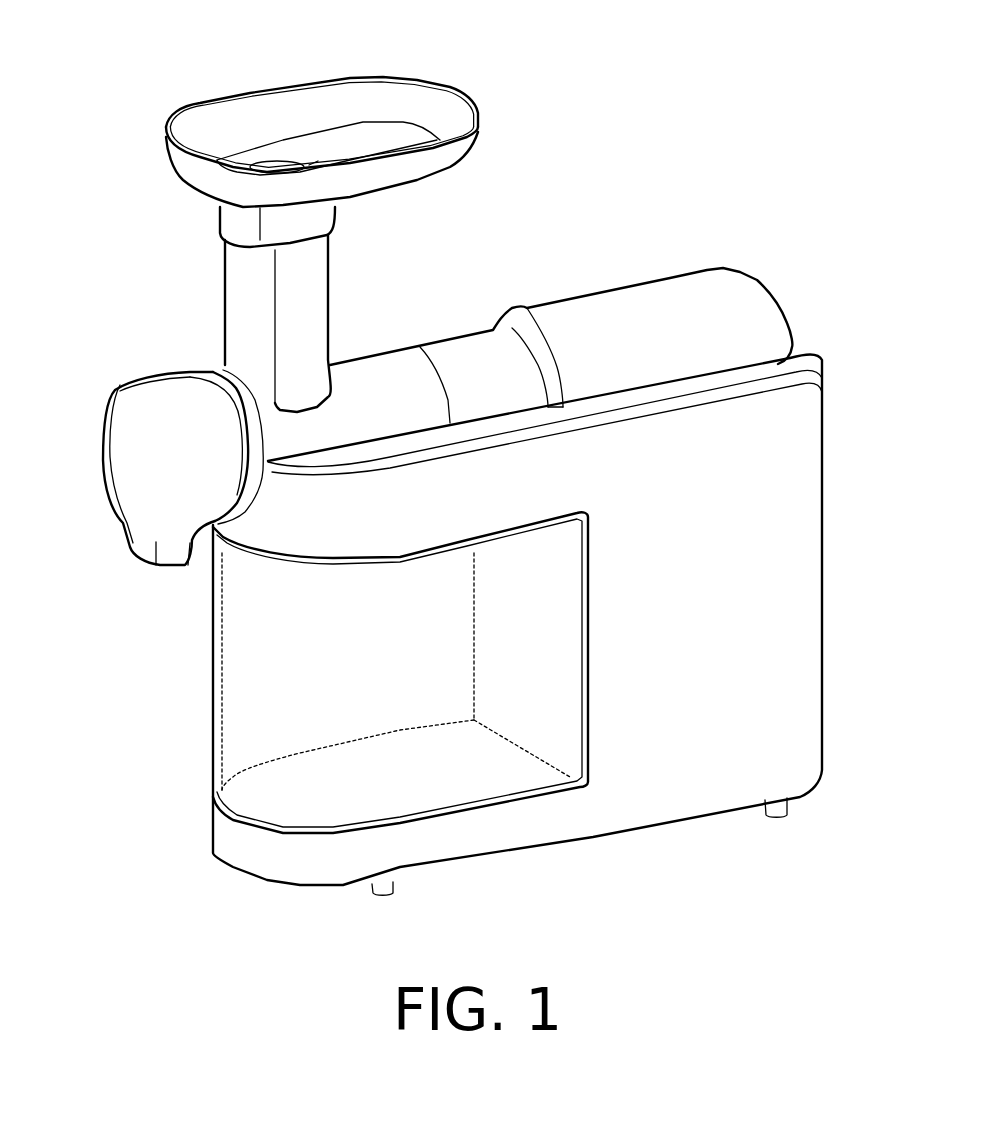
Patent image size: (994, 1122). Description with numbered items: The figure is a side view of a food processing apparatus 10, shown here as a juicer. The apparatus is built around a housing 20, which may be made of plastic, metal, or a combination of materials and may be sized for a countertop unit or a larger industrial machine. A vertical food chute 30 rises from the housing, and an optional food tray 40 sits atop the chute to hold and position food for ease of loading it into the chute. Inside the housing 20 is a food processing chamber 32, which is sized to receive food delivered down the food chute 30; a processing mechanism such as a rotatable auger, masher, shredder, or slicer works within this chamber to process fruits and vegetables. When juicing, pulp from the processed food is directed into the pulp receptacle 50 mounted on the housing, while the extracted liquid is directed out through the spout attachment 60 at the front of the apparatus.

The food processing apparatus 10 is at (752, 179).
The housing 20 is at (665, 753).
The vertical food chute 30 is at (248, 290).
The food processing chamber 32 is at (377, 367).
The food tray 40 is at (300, 108).
The pulp receptacle 50 is at (243, 658).
The spout attachment 60 is at (109, 378).